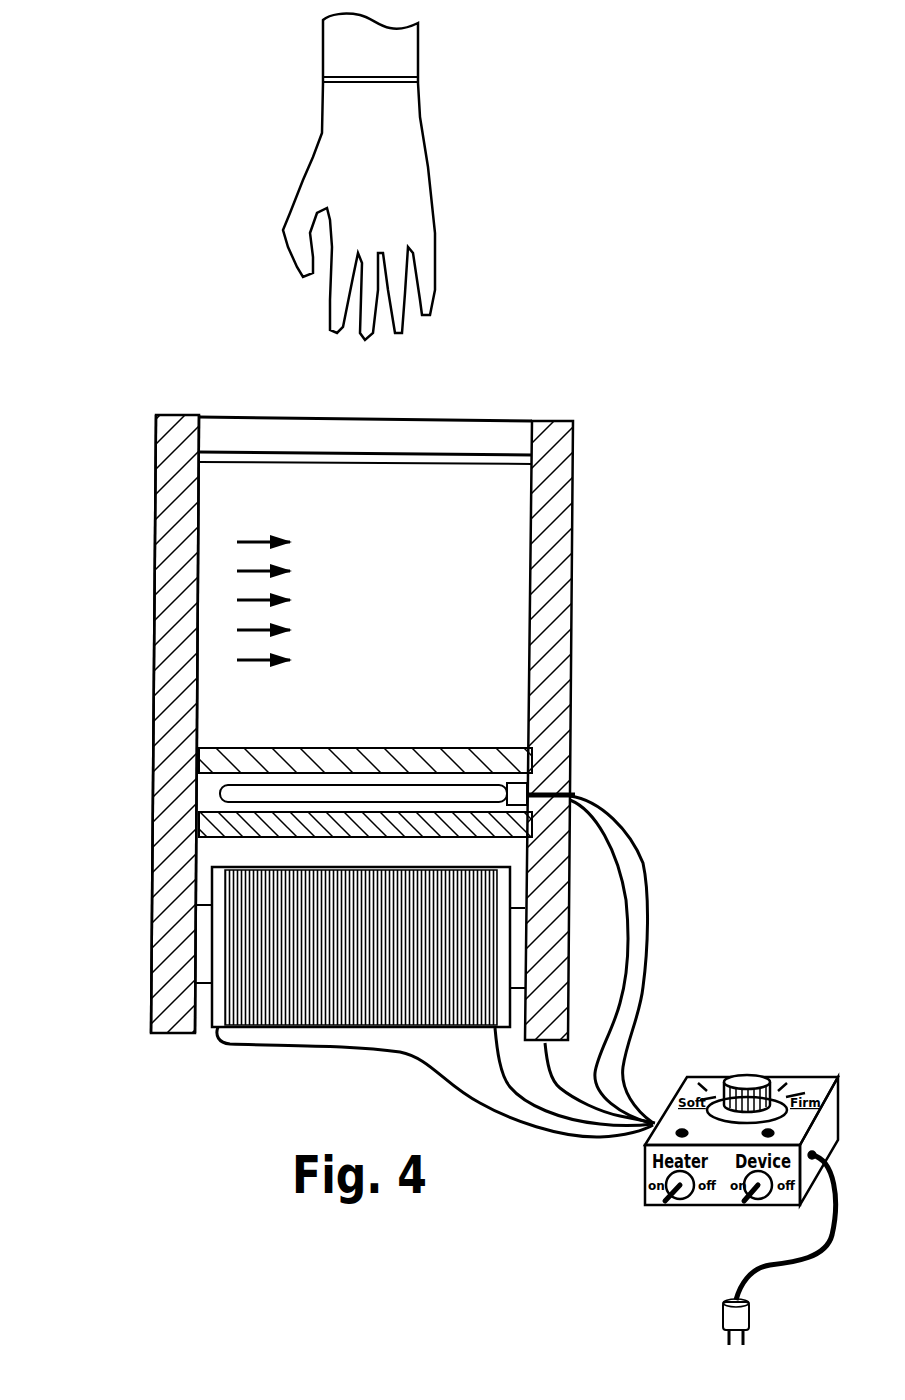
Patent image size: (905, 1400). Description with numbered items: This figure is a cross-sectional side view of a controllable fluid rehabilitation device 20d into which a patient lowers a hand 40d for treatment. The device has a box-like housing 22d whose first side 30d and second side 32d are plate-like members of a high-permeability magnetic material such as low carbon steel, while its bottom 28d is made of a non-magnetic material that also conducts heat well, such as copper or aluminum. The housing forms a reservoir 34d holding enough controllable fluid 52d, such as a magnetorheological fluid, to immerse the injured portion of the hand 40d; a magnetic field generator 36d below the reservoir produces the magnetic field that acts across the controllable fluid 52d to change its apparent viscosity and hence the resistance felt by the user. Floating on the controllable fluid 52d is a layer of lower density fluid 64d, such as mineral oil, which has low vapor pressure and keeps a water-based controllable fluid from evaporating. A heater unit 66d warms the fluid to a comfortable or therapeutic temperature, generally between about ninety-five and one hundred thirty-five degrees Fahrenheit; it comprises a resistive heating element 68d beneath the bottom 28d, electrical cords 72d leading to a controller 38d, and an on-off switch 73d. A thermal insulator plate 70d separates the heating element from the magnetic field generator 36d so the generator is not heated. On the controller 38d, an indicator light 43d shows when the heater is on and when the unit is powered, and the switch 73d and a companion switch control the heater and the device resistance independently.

The hand 40d is at (370, 190).
The controllable fluid rehabilitation device 20d is at (520, 345).
The housing 22d is at (150, 468).
The first side 30d is at (155, 537).
The second side 32d is at (573, 530).
The reservoir 34d is at (198, 668).
The lower density fluid 64d is at (310, 458).
The controllable fluid 52d is at (340, 601).
The bottom 28d is at (370, 773).
The heater unit 66d is at (212, 788).
The heating element 68d is at (490, 790).
The thermal insulator plate 70d is at (378, 838).
The magnetic field generator 36d is at (262, 1033).
The electrical cord 72d is at (630, 928).
The controller 38d is at (768, 1065).
The indicator light 43d is at (676, 1130).
The on-off switch 73d is at (662, 1200).